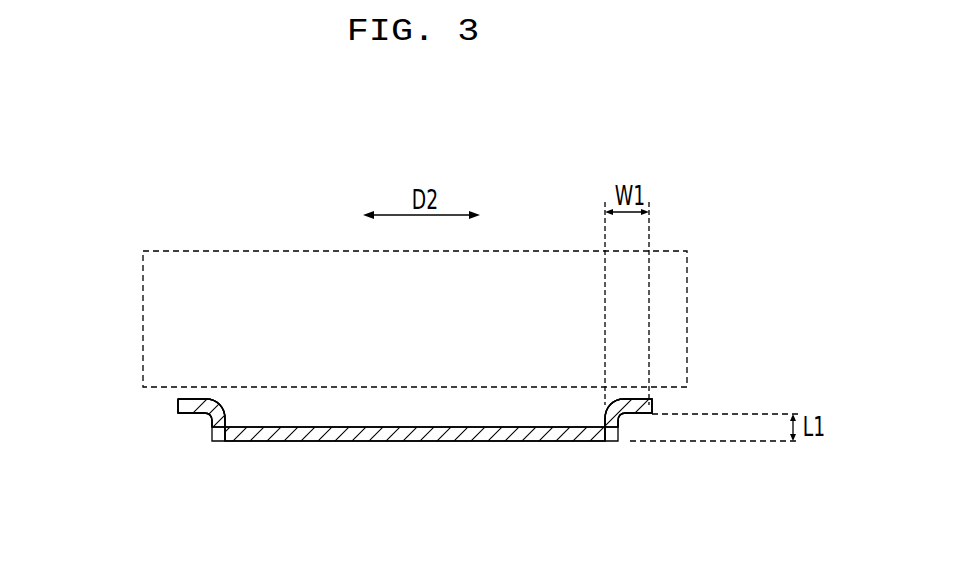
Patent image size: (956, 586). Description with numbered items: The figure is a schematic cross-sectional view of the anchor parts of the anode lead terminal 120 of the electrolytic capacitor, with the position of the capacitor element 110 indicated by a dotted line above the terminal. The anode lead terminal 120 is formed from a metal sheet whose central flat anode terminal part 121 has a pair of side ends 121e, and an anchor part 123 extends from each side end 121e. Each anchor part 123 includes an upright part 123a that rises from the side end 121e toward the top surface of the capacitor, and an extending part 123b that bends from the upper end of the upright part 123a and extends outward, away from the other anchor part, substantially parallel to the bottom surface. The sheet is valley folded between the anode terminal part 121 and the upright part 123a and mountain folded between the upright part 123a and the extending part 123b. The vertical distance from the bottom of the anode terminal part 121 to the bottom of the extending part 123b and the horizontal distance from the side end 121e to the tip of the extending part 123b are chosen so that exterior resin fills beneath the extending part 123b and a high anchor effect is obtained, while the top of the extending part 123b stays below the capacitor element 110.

The capacitor element 110 is at (280, 251).
The anode lead terminal 120 is at (472, 474).
The anode terminal part 121 is at (412, 443).
The side end 121e is at (222, 447).
The anchor part 123 is at (108, 395).
The upright part 123a is at (207, 425).
The extending part 123b is at (180, 406).